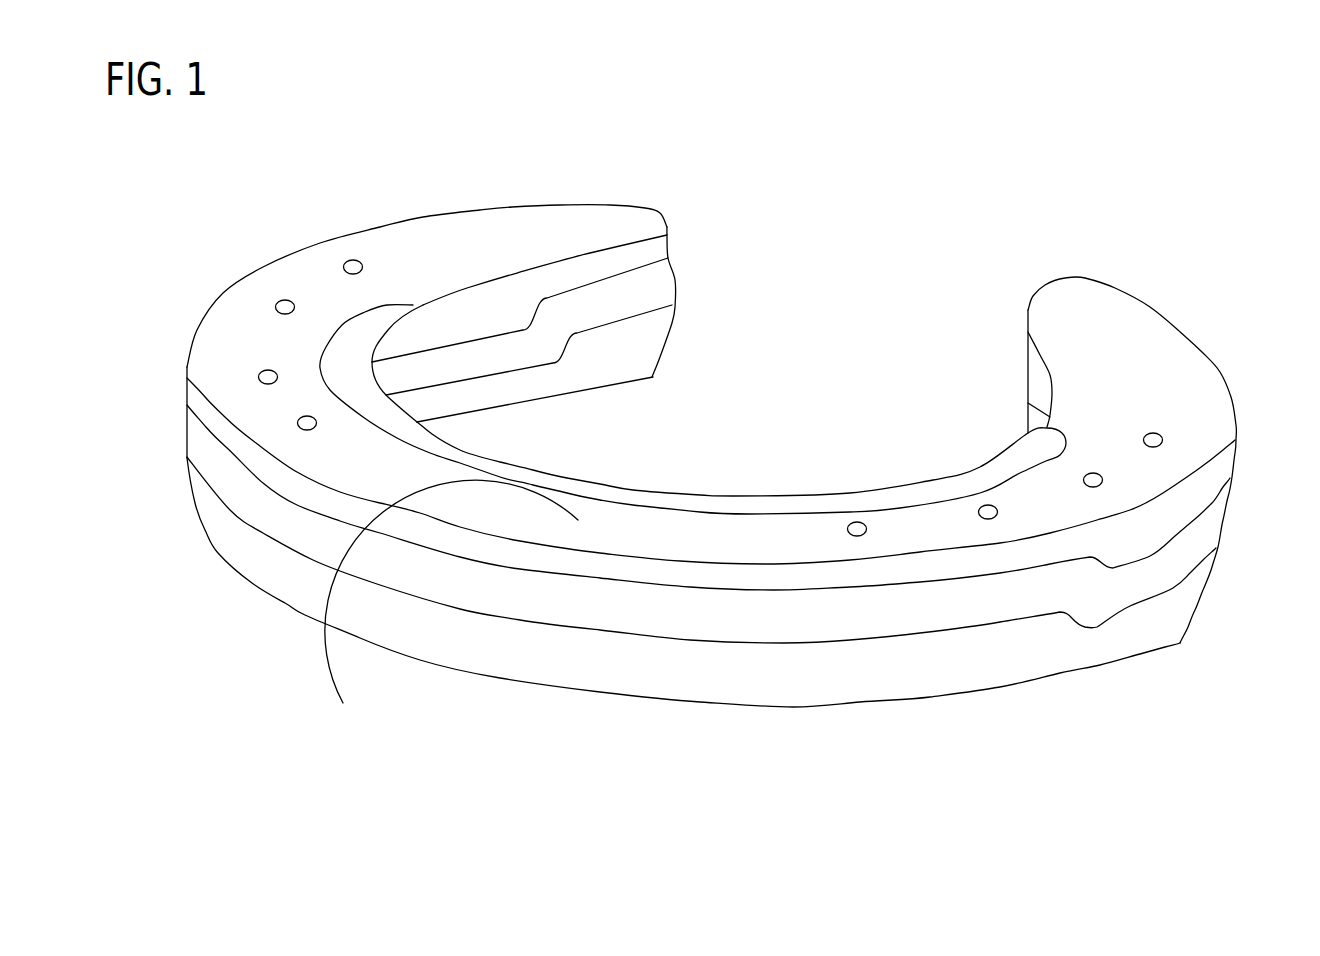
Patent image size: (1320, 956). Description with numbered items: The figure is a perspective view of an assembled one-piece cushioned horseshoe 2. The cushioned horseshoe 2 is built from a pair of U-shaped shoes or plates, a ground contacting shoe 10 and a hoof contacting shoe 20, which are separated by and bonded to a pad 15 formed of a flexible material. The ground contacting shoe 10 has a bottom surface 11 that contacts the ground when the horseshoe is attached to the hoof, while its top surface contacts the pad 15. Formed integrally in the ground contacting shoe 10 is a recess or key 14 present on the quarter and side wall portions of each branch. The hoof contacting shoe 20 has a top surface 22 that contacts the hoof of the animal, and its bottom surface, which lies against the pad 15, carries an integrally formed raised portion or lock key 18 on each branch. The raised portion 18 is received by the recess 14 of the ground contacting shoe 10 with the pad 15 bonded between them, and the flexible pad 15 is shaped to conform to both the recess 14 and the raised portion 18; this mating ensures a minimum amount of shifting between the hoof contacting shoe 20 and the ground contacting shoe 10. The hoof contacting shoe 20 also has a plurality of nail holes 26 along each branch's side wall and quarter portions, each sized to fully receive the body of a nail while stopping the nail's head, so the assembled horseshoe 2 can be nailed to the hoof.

The cushioned horseshoe 2 is at (165, 203).
The ground contacting shoe 10 is at (672, 675).
The bottom surface 11 is at (972, 692).
The recess or key 14 is at (1173, 590).
The pad 15 is at (676, 282).
The raised portion or lock key 18 is at (1155, 537).
The hoof contacting shoe 20 is at (512, 207).
The top surface 22 is at (451, 609).
The nail holes 26 is at (345, 263).